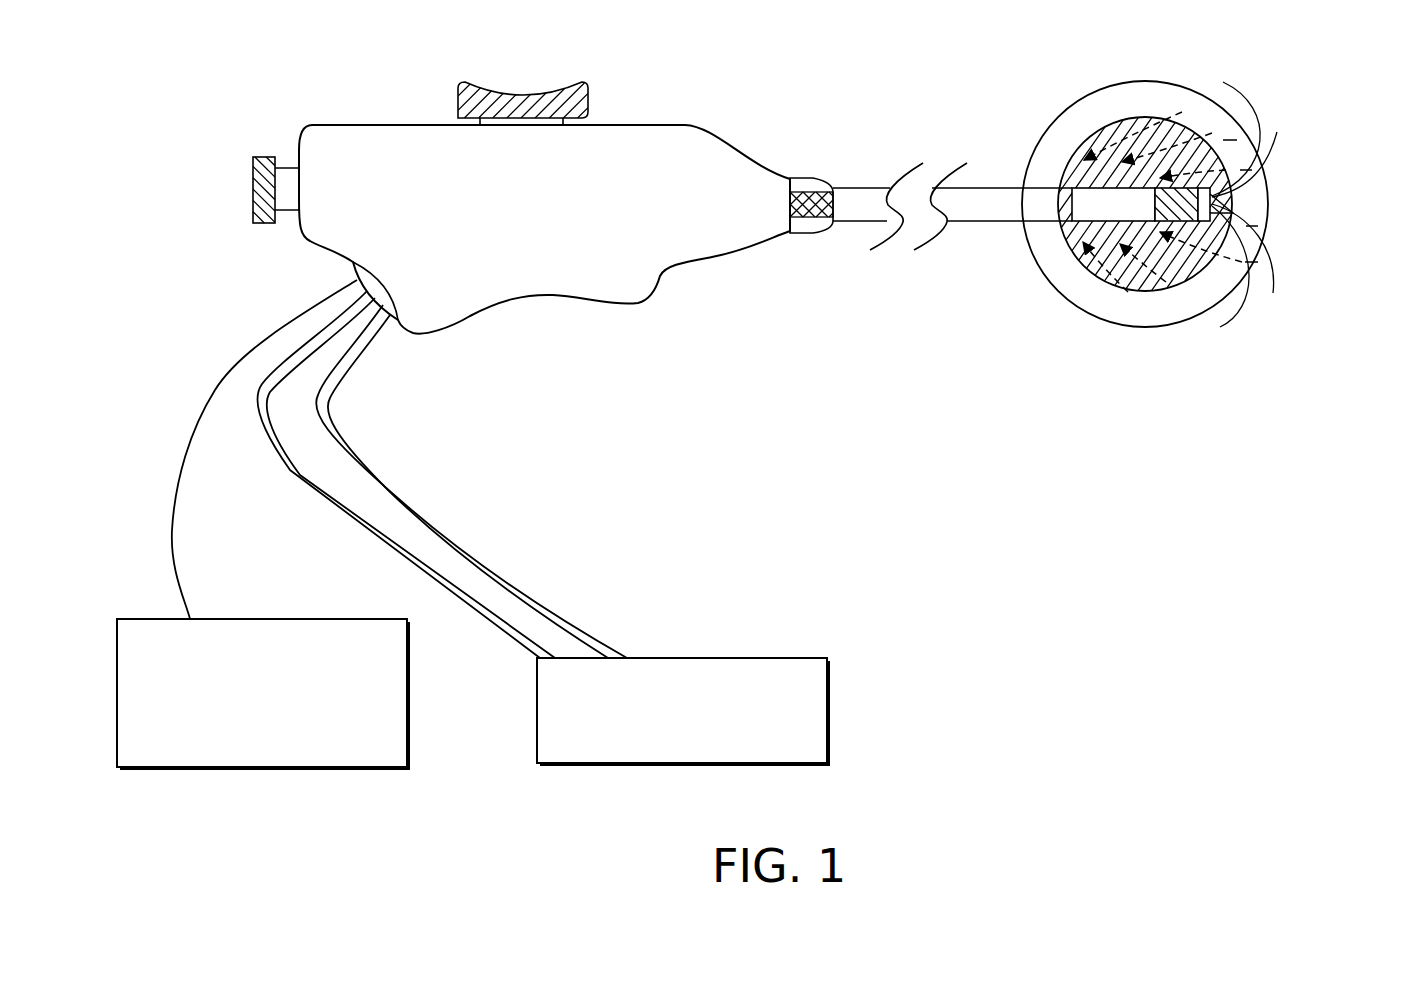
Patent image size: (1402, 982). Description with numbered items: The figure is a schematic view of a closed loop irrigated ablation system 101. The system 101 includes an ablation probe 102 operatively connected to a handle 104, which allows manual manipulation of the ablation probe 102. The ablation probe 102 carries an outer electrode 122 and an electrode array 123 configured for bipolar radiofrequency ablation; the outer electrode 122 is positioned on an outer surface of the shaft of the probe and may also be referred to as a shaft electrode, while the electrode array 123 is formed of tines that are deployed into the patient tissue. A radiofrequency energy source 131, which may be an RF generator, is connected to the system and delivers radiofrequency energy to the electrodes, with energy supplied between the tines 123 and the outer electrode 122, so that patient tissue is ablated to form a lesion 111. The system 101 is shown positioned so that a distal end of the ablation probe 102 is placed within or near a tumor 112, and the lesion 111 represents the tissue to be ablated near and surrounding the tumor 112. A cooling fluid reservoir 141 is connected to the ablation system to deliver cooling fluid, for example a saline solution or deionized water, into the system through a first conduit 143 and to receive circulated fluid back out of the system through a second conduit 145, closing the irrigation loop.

The closed loop irrigated ablation system 101 is at (840, 110).
The ablation probe 102 is at (972, 215).
The handle 104 is at (351, 130).
The lesion 111 is at (1140, 93).
The tumor 112 is at (1147, 275).
The outer electrode 122 is at (1083, 203).
The electrode array 123 is at (1282, 108).
The radiofrequency energy source 131 is at (265, 619).
The cooling fluid reservoir 141 is at (797, 658).
The first conduit 143 is at (472, 560).
The second conduit 145 is at (303, 490).